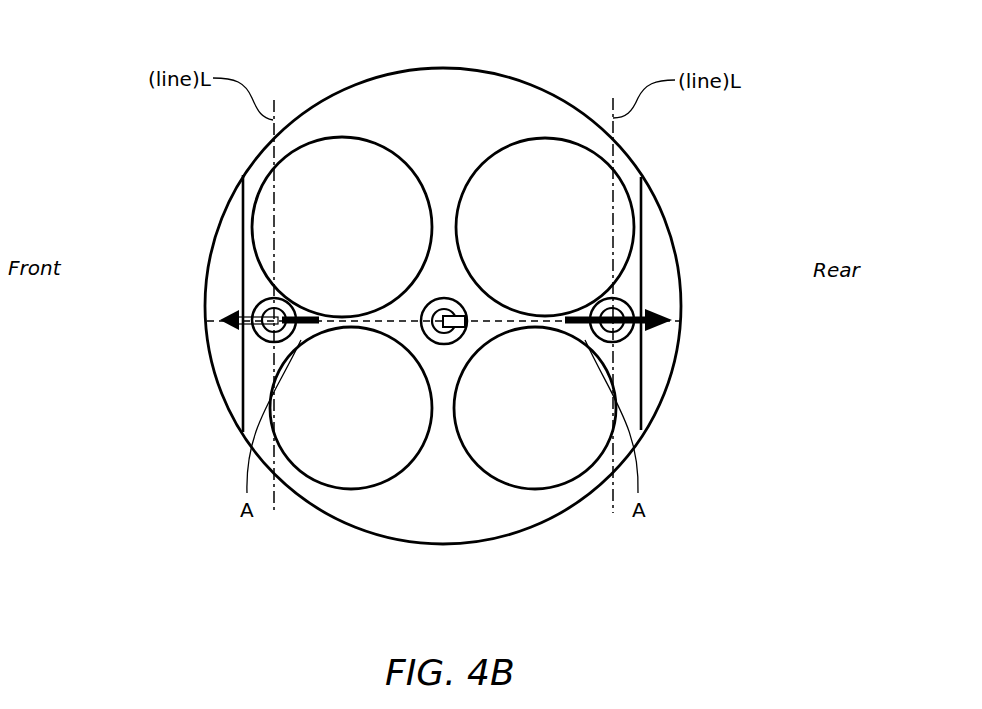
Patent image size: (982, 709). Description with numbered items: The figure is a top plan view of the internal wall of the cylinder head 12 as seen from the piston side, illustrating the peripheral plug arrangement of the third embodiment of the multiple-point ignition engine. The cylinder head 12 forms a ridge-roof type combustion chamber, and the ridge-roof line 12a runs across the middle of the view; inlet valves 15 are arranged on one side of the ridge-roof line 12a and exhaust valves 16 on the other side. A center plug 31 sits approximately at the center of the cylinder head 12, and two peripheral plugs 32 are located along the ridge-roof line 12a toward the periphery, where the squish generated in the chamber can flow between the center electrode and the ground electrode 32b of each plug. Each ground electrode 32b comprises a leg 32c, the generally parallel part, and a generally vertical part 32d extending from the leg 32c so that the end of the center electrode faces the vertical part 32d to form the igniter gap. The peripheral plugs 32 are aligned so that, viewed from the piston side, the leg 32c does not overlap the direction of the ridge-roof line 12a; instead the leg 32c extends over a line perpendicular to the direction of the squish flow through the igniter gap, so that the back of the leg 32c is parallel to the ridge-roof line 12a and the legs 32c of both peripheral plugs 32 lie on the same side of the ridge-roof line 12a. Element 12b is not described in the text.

The cylinder head 12 is at (550, 108).
The ridge-roof line 12a is at (403, 325).
The side wall of cylinder head 12b is at (230, 247).
The inlet valves 15 is at (497, 177).
The exhaust valves 16 is at (510, 450).
The center plug 31 is at (440, 299).
The peripheral plugs 32 is at (446, 343).
The ground electrode 32b is at (446, 311).
The leg of the ground electrode 32c is at (262, 300).
The generally vertical part 32d is at (262, 320).